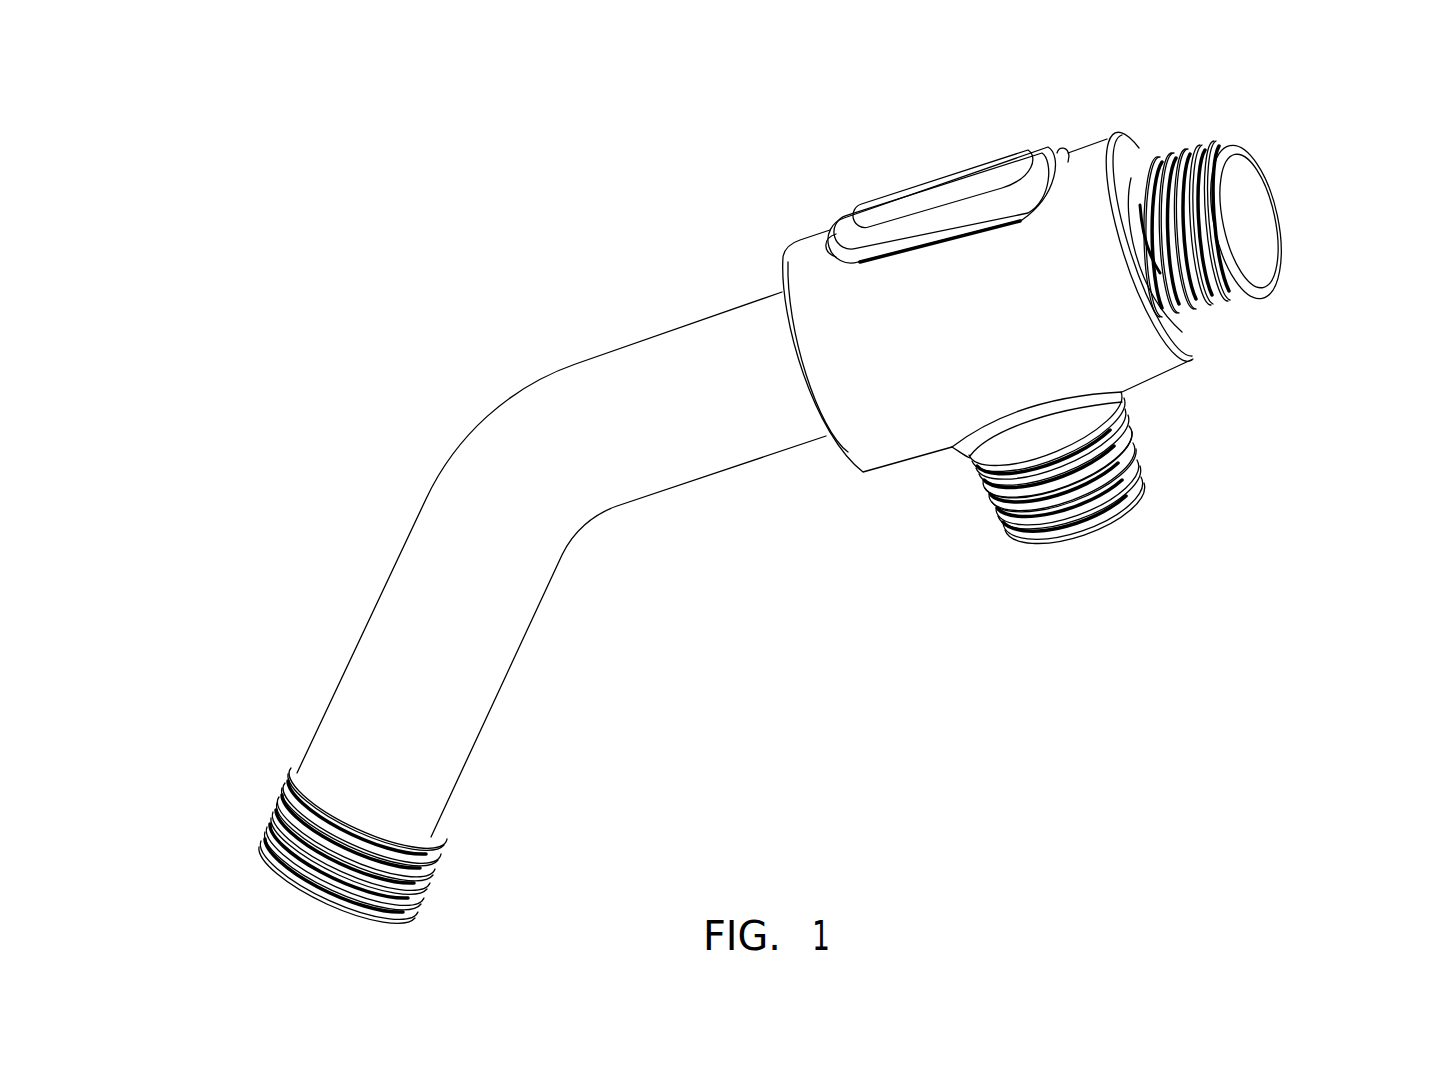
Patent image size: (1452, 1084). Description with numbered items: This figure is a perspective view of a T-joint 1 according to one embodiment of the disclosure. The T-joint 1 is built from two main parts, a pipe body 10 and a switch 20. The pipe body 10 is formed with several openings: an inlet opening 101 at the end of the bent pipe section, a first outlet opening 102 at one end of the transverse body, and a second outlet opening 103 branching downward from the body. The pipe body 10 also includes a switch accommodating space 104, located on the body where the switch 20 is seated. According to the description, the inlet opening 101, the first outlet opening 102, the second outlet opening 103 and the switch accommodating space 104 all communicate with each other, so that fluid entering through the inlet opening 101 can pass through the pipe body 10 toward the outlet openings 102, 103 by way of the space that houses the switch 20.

The T-joint 1 is at (392, 247).
The pipe body 10 is at (515, 423).
The switch 20 is at (927, 197).
The inlet opening 101 is at (279, 905).
The first outlet opening 102 is at (1268, 182).
The second outlet opening 103 is at (1091, 548).
The switch accommodating space 104 is at (1063, 143).